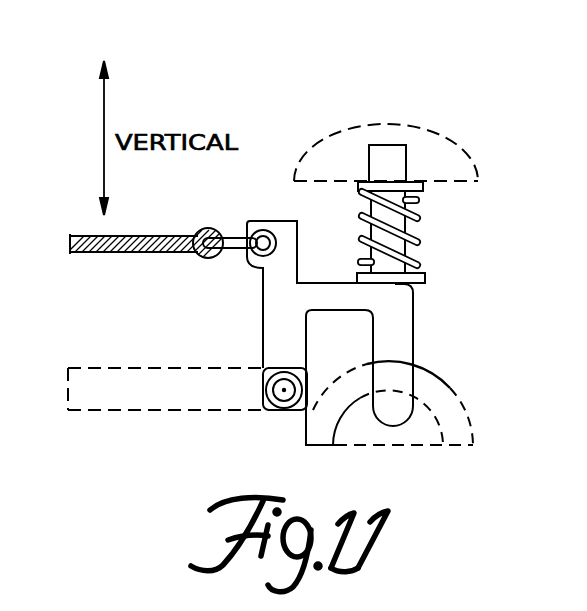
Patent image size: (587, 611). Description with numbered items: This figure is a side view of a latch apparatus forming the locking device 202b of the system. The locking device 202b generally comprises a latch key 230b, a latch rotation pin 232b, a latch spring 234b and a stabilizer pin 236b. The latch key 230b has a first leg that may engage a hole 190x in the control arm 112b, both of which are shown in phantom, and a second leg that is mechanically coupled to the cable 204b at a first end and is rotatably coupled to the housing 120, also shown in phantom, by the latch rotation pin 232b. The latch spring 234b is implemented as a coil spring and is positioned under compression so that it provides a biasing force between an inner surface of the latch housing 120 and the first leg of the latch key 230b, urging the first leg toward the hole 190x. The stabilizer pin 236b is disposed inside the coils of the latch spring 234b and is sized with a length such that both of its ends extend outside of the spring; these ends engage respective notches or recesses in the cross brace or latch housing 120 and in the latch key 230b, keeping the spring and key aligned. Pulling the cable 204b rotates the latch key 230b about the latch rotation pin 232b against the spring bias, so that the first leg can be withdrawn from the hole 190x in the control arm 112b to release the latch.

The locking device 202b is at (292, 130).
The housing 120 is at (343, 145).
The stabilizer pin 236b is at (388, 157).
The latch spring 234b is at (418, 238).
The cable 204b is at (152, 236).
The latch key 230b is at (272, 284).
The control arm 112b is at (451, 392).
The latch rotation pin 232b is at (268, 398).
The hole 190x is at (358, 412).